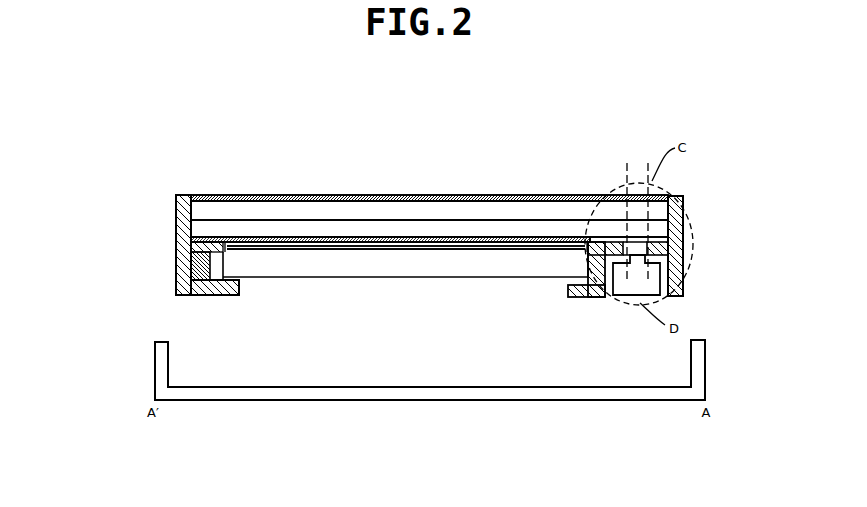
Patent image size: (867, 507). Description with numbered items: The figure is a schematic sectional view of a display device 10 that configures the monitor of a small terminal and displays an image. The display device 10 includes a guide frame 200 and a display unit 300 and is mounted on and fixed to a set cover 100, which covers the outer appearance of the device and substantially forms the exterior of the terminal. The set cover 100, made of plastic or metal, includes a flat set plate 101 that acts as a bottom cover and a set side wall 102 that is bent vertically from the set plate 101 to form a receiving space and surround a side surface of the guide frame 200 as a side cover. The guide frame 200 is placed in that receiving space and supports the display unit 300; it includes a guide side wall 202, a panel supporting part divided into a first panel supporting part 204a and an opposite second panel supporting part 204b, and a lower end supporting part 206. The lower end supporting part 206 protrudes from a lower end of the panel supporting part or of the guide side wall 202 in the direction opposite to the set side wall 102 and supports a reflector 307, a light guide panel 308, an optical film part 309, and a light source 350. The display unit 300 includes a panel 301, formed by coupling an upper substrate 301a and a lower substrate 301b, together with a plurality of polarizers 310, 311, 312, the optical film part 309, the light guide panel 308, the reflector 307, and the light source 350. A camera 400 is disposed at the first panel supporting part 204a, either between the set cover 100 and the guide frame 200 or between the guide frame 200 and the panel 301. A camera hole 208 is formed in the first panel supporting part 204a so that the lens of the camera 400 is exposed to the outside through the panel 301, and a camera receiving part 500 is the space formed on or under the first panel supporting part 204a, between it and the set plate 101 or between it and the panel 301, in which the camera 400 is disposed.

The display device 10 is at (647, 90).
The set cover 100 is at (255, 458).
The set plate 101 is at (258, 400).
The set side wall 102 is at (165, 353).
The guide frame 200 is at (110, 242).
The guide side wall 202 is at (177, 250).
The first panel supporting part 204a is at (592, 262).
The second panel supporting part 204b is at (192, 263).
The lower end supporting part 206 is at (220, 292).
The camera hole 208 is at (637, 246).
The display unit 300 is at (532, 134).
The panel 301 is at (268, 162).
The upper substrate 301a is at (323, 207).
The lower substrate 301b is at (268, 225).
The reflector 307 is at (378, 250).
The light guide panel 308 is at (411, 265).
The optical film part 309 is at (456, 245).
The polarizer 310 is at (507, 163).
The polarizer 311 is at (518, 237).
The polarizer 312 is at (566, 198).
The light source 350 is at (217, 238).
The camera 400 is at (657, 278).
The camera receiving part 500 is at (608, 293).